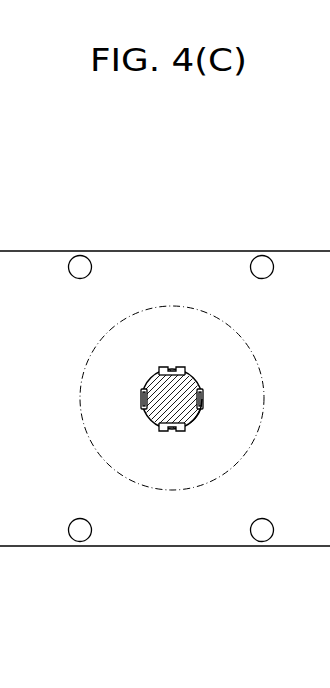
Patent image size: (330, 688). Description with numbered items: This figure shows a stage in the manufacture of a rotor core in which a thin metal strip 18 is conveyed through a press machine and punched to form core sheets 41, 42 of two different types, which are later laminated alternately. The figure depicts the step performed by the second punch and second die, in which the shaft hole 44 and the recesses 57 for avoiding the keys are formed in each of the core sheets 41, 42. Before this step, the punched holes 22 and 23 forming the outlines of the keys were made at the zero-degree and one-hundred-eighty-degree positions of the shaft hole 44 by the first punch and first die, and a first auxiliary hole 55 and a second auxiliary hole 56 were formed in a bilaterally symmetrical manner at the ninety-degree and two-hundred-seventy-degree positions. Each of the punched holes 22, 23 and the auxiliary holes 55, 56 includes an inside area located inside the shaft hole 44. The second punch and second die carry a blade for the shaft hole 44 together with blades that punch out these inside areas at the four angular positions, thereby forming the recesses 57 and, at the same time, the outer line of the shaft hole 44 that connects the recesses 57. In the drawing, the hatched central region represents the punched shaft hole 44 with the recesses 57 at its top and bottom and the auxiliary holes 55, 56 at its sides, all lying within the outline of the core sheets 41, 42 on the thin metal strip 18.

The thin metal strip 18 is at (315, 553).
The core sheet 41 is at (158, 323).
The core sheet 42 is at (112, 318).
The punched hole 22 is at (178, 366).
The recess 57 is at (168, 366).
The punched hole 23 is at (162, 430).
The first auxiliary hole 55 is at (140, 414).
The second auxiliary hole 56 is at (199, 395).
The shaft hole 44 is at (197, 418).